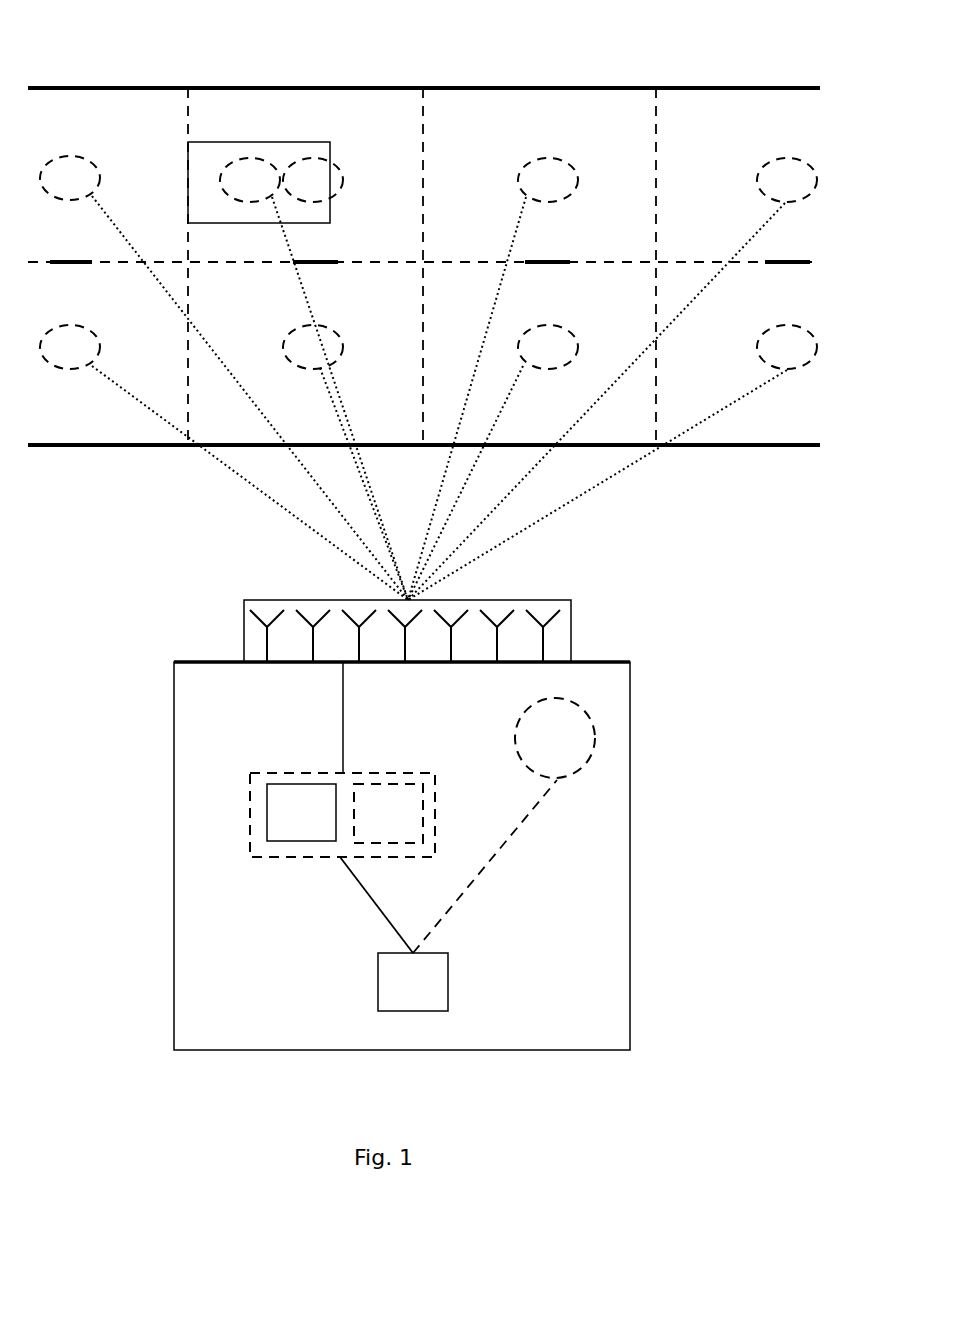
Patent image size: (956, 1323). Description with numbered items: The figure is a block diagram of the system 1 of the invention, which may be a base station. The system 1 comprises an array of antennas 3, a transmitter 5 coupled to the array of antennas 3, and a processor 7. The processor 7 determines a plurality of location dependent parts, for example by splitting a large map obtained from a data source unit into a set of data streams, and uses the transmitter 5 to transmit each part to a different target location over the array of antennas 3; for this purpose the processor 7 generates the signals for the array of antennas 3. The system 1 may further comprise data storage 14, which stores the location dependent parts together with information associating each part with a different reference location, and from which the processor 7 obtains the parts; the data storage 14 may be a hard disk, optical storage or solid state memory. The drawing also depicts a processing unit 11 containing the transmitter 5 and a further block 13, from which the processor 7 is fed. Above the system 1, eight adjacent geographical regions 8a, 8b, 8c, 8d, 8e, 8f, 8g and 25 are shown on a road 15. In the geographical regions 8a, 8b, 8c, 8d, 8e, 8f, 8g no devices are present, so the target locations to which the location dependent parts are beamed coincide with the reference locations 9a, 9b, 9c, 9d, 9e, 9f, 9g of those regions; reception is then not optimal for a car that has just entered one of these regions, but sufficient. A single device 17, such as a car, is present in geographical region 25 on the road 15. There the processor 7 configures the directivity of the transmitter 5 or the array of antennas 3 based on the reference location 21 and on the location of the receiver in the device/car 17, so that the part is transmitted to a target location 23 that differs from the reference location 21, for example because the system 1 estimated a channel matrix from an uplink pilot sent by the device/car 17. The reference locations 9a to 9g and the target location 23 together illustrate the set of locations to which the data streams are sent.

The system 1 is at (630, 1002).
The array of antennas 3 is at (244, 630).
The transmitter 5 is at (267, 823).
The processor 7 is at (448, 982).
The geographical region 8a is at (87, 119).
The geographical region 8b is at (566, 119).
The geographical region 8c is at (796, 119).
The geographical region 8d is at (83, 434).
The geographical region 8e is at (330, 434).
The geographical region 8f is at (556, 434).
The geographical region 8g is at (801, 434).
The reference location 9a is at (100, 180).
The reference location 9b is at (578, 182).
The reference location 9c is at (757, 182).
The reference location 9d is at (100, 349).
The reference location 9e is at (343, 349).
The reference location 9f is at (578, 349).
The reference location 9g is at (757, 349).
The evaluation unit 11 is at (275, 772).
The memory 13 is at (423, 814).
The data storage 14 is at (572, 775).
The road 15 is at (82, 86).
The device/car 17 is at (205, 222).
The reference location 21 is at (343, 182).
The target location 23 is at (238, 152).
The geographical region 25 is at (412, 119).